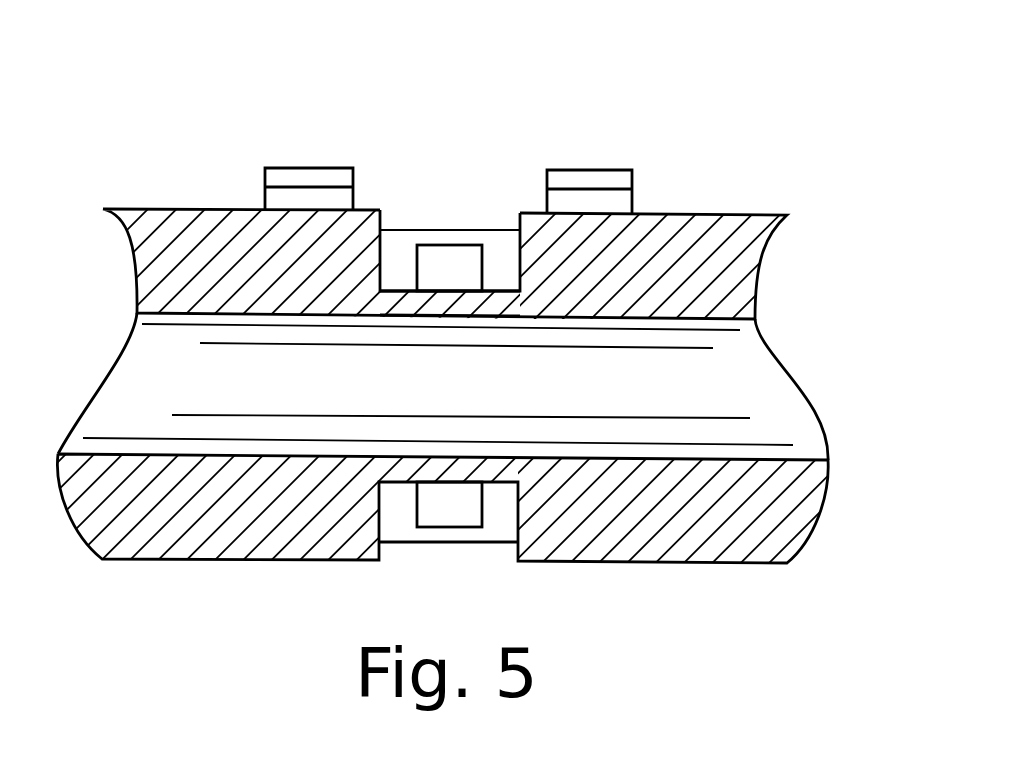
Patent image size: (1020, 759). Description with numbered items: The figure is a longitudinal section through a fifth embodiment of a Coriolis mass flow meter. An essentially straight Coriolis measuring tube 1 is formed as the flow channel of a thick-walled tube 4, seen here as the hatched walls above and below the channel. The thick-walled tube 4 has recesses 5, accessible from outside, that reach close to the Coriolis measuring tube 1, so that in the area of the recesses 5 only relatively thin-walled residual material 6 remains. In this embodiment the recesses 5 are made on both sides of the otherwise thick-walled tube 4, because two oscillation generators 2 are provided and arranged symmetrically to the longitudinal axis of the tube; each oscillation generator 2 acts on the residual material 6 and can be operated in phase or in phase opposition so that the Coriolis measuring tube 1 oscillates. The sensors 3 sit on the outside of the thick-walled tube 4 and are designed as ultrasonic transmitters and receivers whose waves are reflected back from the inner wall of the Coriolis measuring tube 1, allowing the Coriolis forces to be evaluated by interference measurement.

The Coriolis measuring tube 1 is at (698, 457).
The oscillation generator 2 is at (453, 267).
The sensor 3 is at (297, 174).
The thick-walled tube 4 is at (703, 290).
The recess 5 is at (518, 253).
The residual material 6 is at (485, 307).